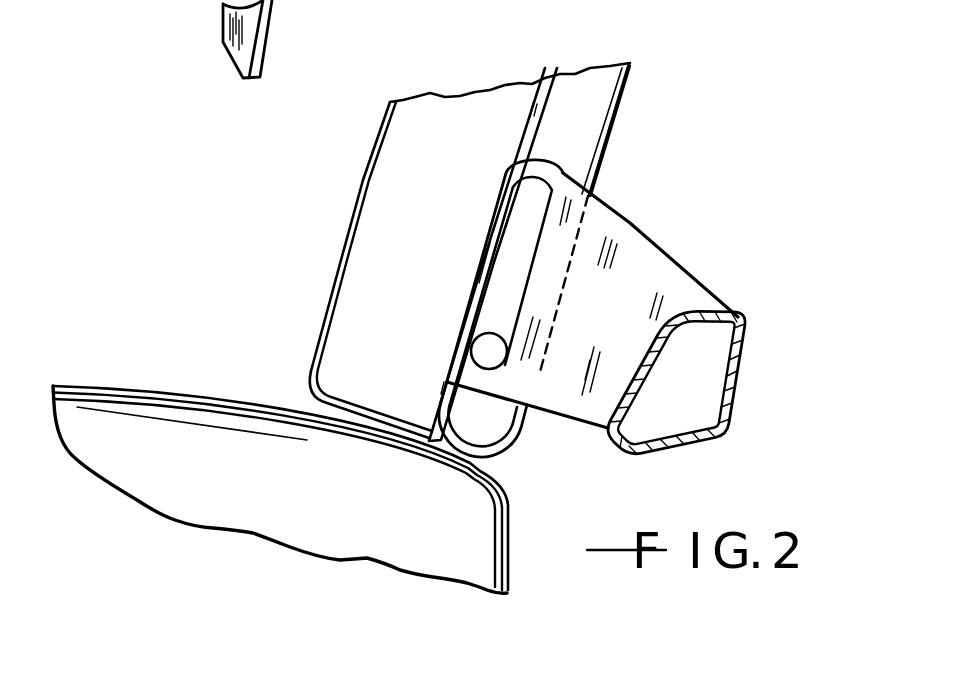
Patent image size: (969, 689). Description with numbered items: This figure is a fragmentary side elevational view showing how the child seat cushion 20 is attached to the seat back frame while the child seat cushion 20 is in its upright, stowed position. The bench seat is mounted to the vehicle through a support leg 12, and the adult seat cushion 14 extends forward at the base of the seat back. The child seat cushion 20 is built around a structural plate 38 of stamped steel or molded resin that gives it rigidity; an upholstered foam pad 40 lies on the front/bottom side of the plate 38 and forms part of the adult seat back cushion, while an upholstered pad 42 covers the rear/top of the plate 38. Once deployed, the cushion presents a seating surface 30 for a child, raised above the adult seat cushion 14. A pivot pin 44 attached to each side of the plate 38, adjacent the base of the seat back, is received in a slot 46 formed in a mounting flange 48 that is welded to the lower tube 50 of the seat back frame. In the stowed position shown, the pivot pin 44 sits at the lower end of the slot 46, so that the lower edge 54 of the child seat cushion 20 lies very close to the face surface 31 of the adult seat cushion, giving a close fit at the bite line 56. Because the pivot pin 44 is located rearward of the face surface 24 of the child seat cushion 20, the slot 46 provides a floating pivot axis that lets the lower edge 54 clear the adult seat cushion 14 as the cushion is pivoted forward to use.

The support leg 12 is at (272, 21).
The seat cushion 14 is at (206, 480).
The child seat cushion 20 is at (478, 88).
The face surface 24 is at (352, 228).
The seating surface 30 is at (610, 147).
The face surface 31 is at (175, 386).
The structural plate 38 is at (541, 72).
The upholstered foam pad 40 is at (428, 131).
The upholstered pad 42 is at (588, 92).
The pivot pin 44 is at (488, 333).
The slot 46 is at (512, 300).
The mounting flange 48 is at (650, 240).
The lower tube 50 is at (748, 377).
The lower edge 54 is at (368, 427).
The bite line 56 is at (298, 396).